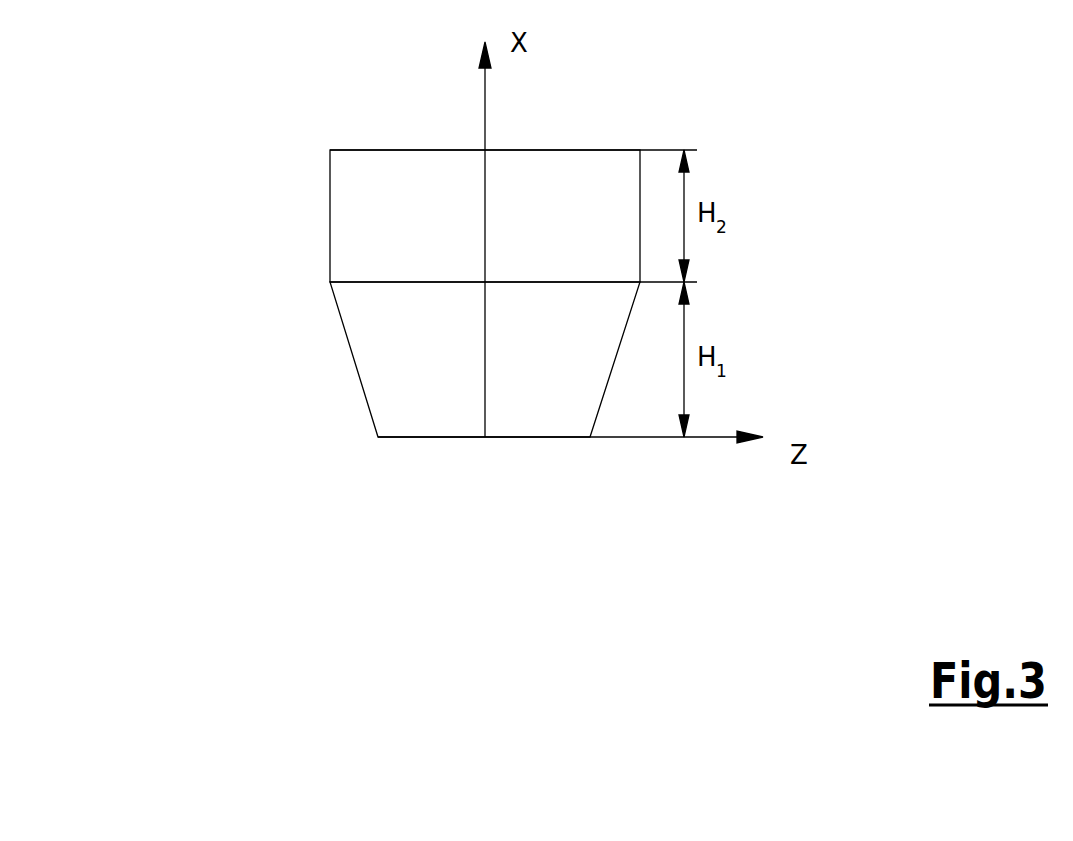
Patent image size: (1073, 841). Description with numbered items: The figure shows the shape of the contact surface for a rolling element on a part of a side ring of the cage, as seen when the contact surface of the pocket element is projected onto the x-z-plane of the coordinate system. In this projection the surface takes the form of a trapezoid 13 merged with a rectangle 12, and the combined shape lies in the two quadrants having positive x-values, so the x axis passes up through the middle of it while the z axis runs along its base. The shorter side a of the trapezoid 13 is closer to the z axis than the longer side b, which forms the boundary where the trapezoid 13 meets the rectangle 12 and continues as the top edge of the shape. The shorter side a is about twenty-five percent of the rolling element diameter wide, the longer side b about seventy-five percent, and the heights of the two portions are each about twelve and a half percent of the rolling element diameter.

The rectangle 12 is at (381, 224).
The trapezoid 13 is at (393, 350).
The longer side b is at (434, 131).
The shorter side a is at (451, 440).